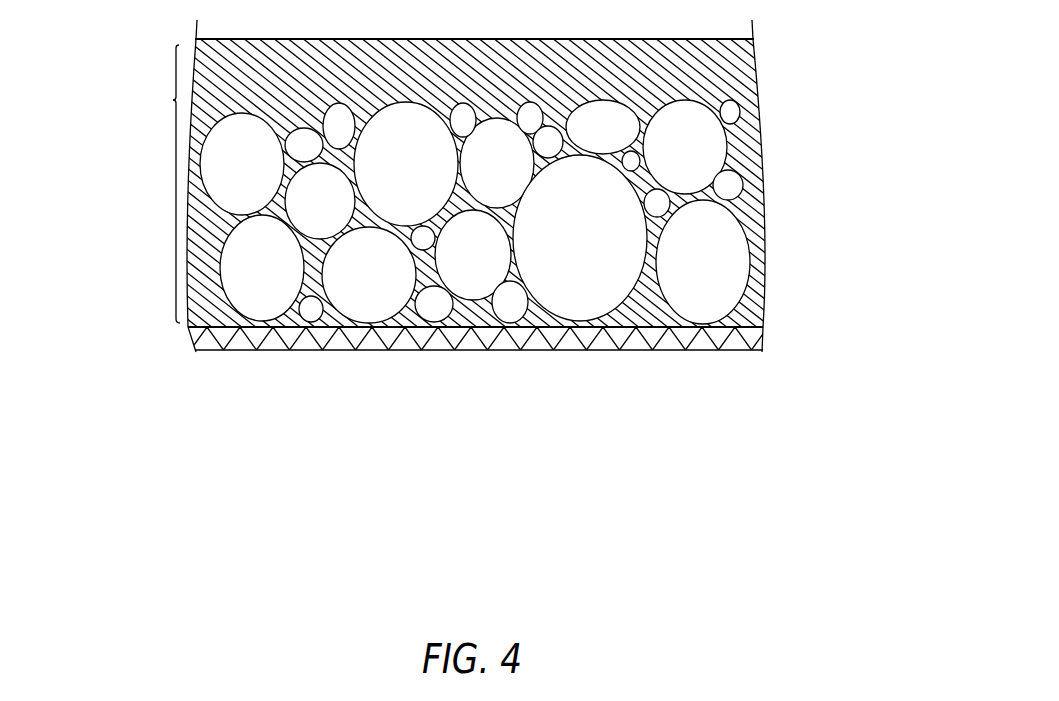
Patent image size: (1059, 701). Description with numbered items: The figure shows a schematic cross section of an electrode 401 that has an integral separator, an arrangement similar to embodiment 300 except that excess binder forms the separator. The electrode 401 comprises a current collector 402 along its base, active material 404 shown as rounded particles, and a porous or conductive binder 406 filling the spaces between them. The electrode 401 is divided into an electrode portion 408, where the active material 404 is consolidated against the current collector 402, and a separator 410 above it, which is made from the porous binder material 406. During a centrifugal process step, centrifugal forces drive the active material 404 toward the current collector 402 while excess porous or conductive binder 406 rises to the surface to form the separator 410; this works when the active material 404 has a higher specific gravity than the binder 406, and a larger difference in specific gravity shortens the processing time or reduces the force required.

The embodiment 300 is at (466, 324).
The electrode 401 is at (463, 255).
The current collector 402 is at (258, 350).
The active material 404 is at (703, 145).
The porous or conductive binder 406 is at (652, 313).
The electrode portion 408 is at (463, 255).
The separator 410 is at (173, 72).